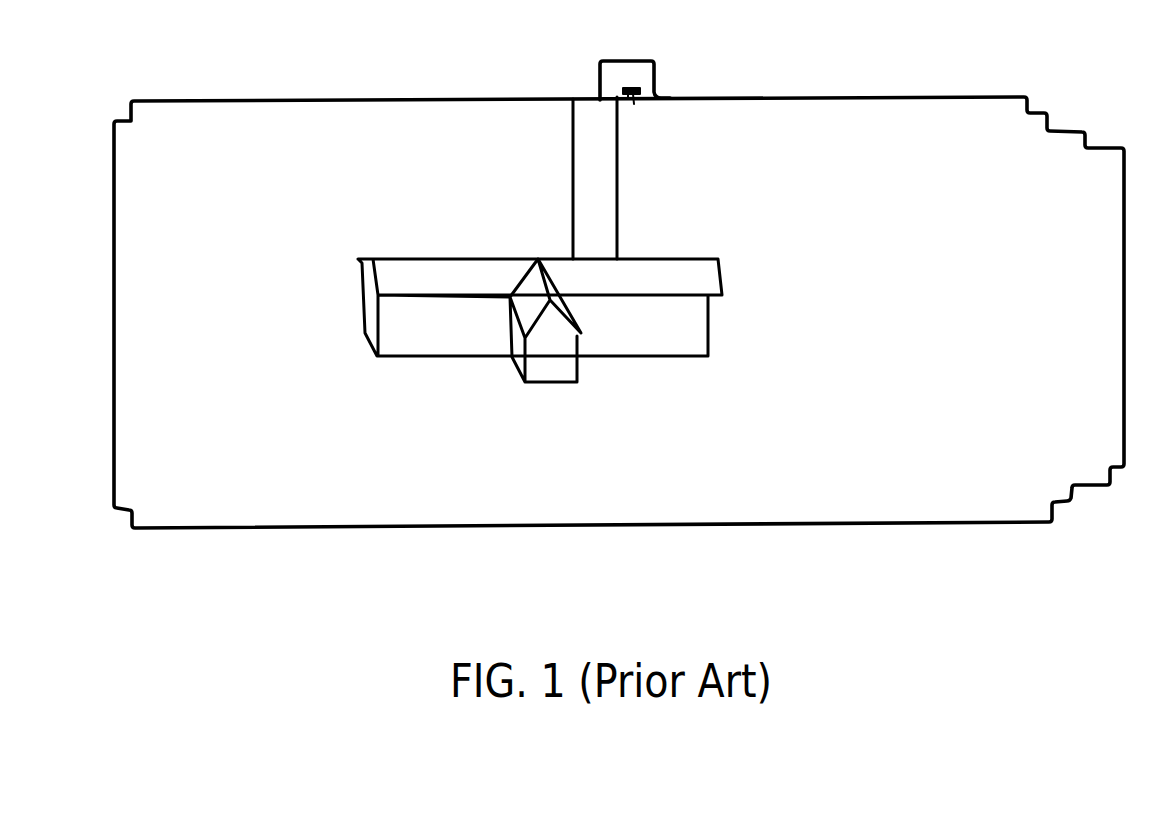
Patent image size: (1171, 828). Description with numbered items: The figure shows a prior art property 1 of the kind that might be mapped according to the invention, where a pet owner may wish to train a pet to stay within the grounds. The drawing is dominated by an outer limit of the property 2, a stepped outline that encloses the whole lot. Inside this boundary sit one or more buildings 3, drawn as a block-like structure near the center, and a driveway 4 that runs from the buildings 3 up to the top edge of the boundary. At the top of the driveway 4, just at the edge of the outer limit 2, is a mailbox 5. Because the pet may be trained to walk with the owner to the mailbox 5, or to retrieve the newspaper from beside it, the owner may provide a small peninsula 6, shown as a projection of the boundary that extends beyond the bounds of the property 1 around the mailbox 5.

The property 1 is at (1088, 92).
The outer limit of the property 2 is at (1125, 232).
The building 3 is at (650, 340).
The driveway 4 is at (585, 187).
The mailbox 5 is at (638, 103).
The peninsula 6 is at (637, 76).